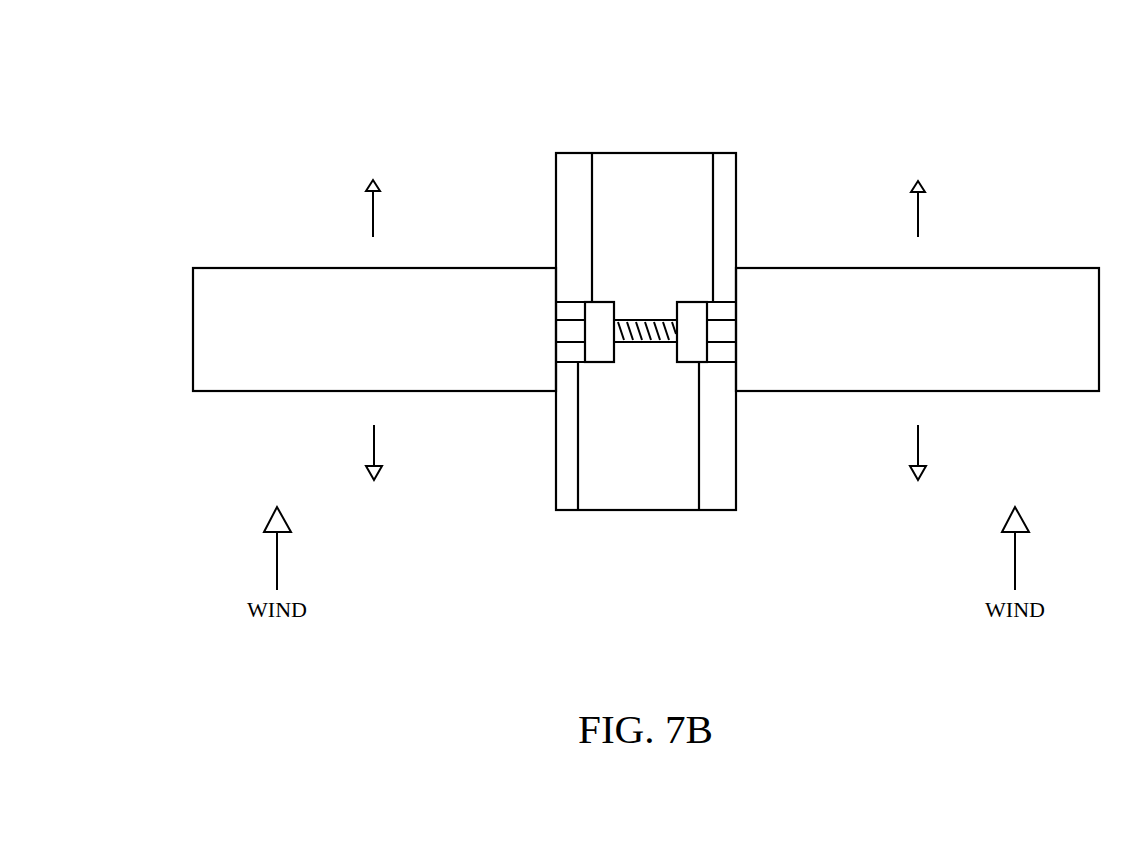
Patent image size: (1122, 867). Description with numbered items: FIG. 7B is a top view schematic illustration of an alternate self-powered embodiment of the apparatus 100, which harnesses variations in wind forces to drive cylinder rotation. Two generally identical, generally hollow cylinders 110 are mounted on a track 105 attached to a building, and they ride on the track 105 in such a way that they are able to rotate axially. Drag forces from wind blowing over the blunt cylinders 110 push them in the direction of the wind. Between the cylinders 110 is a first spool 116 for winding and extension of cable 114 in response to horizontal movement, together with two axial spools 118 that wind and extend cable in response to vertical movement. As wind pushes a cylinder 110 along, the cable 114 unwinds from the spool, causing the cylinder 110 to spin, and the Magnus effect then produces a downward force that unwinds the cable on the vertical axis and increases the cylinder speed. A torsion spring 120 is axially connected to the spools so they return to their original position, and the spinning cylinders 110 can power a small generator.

The apparatus 100 is at (497, 102).
The track 105 is at (738, 246).
The cylinder 110 is at (280, 268).
The cable 114 is at (592, 195).
The first spool 116 is at (688, 301).
The axial spools 118 is at (568, 351).
The torsion spring 120 is at (650, 344).